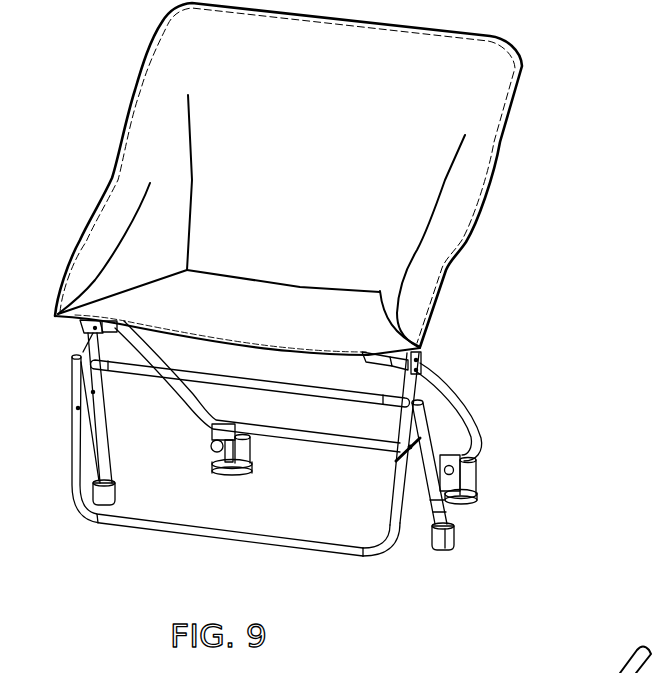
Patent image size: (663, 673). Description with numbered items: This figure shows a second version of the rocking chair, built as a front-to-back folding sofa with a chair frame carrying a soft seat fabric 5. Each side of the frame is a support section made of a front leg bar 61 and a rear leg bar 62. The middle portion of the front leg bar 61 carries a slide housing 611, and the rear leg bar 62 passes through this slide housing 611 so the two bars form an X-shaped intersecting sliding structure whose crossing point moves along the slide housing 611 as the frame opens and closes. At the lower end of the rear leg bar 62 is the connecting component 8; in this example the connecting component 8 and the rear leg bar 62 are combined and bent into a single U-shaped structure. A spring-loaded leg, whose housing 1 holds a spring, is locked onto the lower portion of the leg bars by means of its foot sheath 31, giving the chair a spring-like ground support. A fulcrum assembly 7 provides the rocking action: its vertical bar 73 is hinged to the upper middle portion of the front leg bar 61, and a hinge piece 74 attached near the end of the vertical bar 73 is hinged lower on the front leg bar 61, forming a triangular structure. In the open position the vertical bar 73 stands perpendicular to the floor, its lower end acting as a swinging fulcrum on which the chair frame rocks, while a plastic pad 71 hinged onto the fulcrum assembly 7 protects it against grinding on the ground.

The housing 1 is at (479, 472).
The seat fabric 5 is at (158, 153).
The fulcrum assembly 7 is at (427, 548).
The connecting component 8 is at (210, 521).
The foot sheath 31 is at (206, 438).
The front leg bar 61 is at (396, 493).
The rear leg bar 62 is at (471, 428).
The plastic pad 71 is at (456, 544).
The vertical bar 73 is at (449, 515).
The hinge piece 74 is at (417, 440).
The slide housing 611 is at (422, 366).